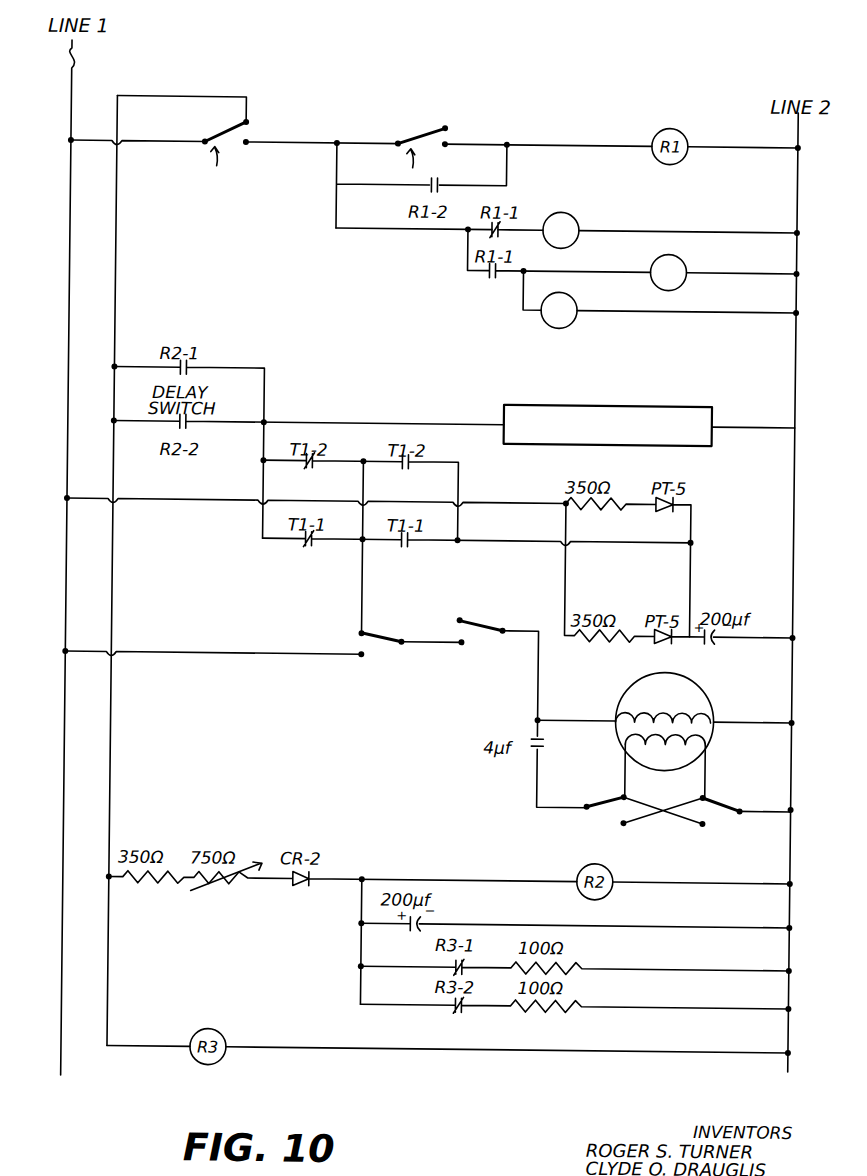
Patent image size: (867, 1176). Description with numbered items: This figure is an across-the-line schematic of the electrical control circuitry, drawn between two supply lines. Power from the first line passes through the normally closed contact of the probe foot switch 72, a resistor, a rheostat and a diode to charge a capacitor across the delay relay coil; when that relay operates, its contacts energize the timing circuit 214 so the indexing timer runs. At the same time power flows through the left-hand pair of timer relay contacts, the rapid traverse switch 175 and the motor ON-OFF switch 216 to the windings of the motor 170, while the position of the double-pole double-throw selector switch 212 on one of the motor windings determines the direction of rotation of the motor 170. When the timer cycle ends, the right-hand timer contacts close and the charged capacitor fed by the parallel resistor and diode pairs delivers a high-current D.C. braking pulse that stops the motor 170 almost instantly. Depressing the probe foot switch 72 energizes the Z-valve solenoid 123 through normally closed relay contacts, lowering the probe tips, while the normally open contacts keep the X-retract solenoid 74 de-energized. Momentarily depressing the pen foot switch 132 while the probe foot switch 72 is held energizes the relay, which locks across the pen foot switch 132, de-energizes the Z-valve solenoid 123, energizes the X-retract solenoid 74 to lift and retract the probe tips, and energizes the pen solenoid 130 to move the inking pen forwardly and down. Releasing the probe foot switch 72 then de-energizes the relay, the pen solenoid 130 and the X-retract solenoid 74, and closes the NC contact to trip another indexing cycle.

The probe foot switch 72 is at (225, 135).
The pen foot switch 132 is at (416, 130).
The Z-valve solenoid 123 is at (574, 220).
The X-retract solenoid 74 is at (680, 261).
The pen solenoid 130 is at (557, 330).
The timing circuit 214 is at (625, 404).
The rapid traverse switch 175 is at (376, 638).
The motor ON-OFF switch 216 is at (497, 628).
The motor 170 is at (702, 679).
The double-pole double-throw selector switch 212 is at (682, 784).